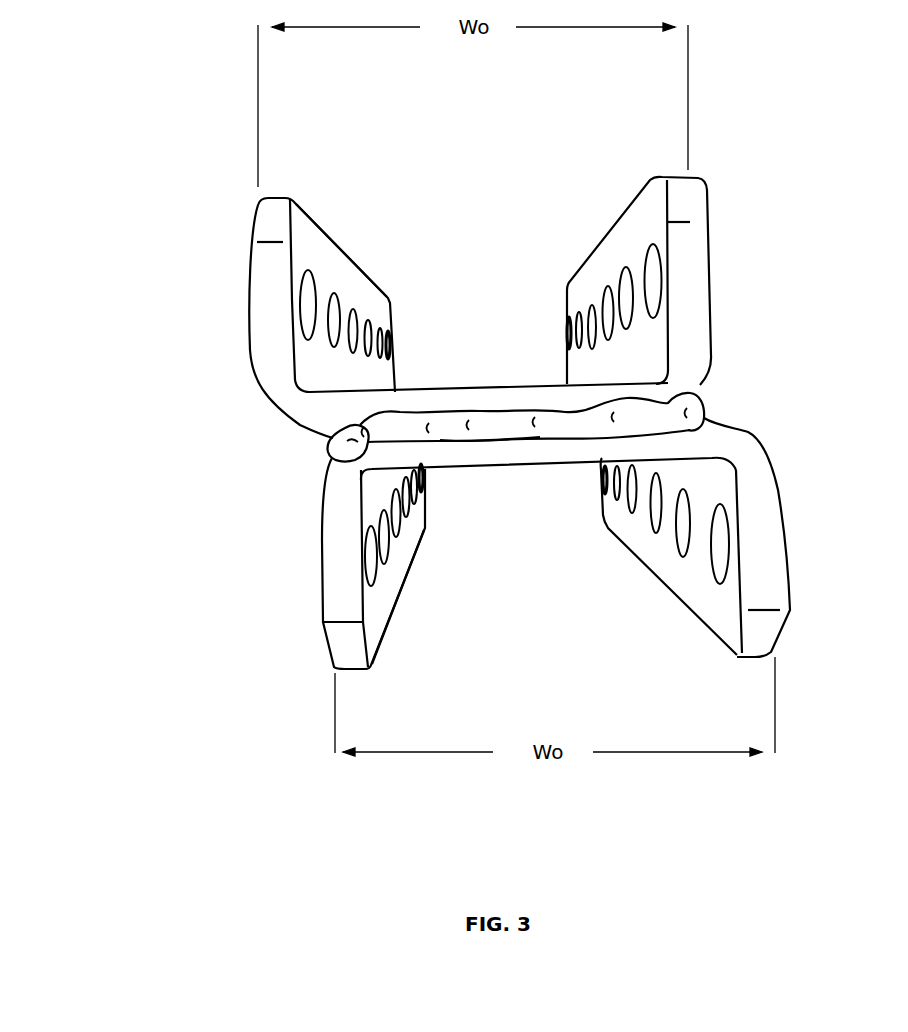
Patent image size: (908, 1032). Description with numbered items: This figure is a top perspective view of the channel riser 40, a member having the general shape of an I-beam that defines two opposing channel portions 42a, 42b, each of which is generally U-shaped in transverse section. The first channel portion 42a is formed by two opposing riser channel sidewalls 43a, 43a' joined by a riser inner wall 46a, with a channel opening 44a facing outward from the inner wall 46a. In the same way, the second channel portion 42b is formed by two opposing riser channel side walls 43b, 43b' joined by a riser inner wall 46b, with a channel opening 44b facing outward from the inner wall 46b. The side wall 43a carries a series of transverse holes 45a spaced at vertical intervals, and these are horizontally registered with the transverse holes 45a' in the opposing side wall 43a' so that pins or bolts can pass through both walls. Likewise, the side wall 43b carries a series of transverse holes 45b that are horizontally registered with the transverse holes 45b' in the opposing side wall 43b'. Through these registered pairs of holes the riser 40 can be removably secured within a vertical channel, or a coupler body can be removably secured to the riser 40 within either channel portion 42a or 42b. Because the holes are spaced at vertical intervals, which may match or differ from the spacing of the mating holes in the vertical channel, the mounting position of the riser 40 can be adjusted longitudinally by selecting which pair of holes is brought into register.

The channel riser 40 is at (200, 157).
The channel portion 42a is at (563, 175).
The channel portion 42b is at (636, 645).
The riser channel sidewall 43a is at (250, 318).
The riser channel sidewall 43a' is at (682, 281).
The riser channel side wall 43b is at (317, 563).
The riser channel side wall 43b' is at (741, 537).
The channel opening 44a is at (353, 260).
The channel opening 44b is at (373, 615).
The transverse holes 45a is at (326, 353).
The transverse holes 45a' is at (678, 266).
The transverse holes 45b is at (357, 585).
The transverse holes 45b' is at (627, 537).
The riser inner wall 46a is at (470, 386).
The riser inner wall 46b is at (520, 453).